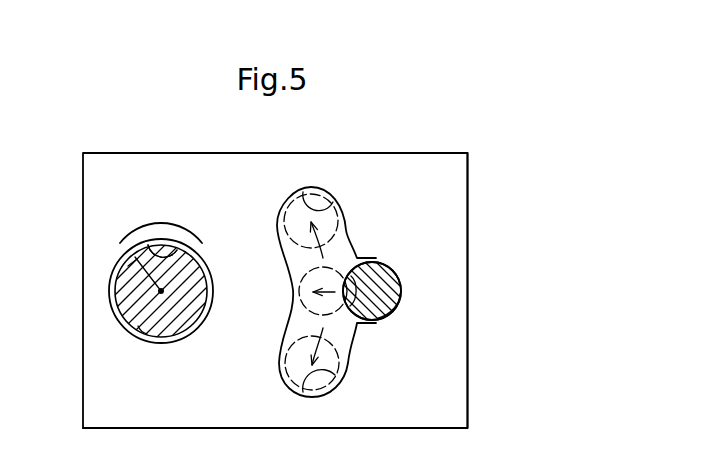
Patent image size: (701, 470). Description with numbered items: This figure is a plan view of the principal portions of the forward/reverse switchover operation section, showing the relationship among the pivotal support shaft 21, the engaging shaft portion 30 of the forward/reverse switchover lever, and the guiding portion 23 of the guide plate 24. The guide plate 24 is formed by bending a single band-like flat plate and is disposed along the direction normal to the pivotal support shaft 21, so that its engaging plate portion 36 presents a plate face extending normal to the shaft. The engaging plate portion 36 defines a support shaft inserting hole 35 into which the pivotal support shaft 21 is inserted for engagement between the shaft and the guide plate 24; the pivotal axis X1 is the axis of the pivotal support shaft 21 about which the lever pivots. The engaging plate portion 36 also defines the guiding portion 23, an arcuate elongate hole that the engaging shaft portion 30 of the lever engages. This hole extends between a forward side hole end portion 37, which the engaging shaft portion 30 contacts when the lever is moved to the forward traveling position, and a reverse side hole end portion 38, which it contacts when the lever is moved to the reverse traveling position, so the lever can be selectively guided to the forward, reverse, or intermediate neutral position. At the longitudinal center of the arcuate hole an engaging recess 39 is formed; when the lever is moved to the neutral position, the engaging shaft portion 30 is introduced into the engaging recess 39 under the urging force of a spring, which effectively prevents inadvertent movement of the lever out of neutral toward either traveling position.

The pivotal support shaft 21 is at (133, 337).
The guiding portion 23 is at (337, 253).
The guide plate 24 is at (468, 192).
The engaging shaft portion 30 is at (299, 295).
The support shaft inserting hole 35 is at (189, 246).
The engaging plate portion 36 is at (442, 398).
The forward side hole end portion 37 is at (338, 370).
The reverse side hole end portion 38 is at (337, 200).
The engaging recess 39 is at (386, 316).
The pivotal axis X1 is at (132, 253).